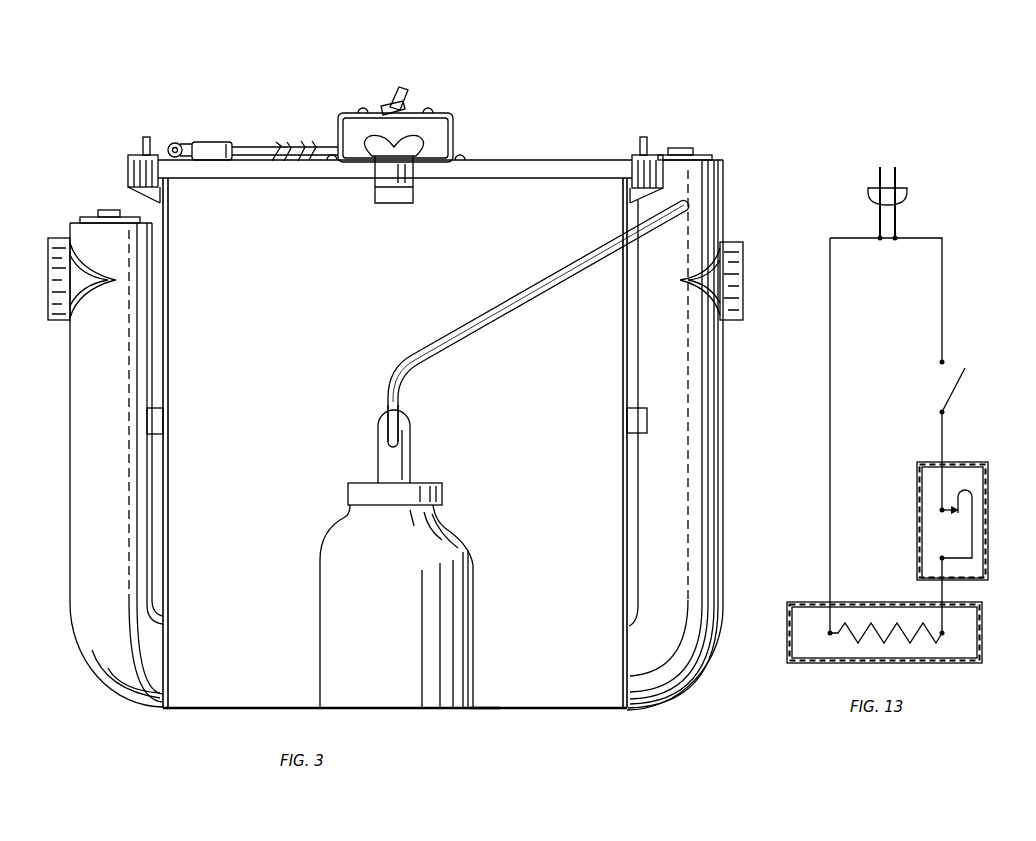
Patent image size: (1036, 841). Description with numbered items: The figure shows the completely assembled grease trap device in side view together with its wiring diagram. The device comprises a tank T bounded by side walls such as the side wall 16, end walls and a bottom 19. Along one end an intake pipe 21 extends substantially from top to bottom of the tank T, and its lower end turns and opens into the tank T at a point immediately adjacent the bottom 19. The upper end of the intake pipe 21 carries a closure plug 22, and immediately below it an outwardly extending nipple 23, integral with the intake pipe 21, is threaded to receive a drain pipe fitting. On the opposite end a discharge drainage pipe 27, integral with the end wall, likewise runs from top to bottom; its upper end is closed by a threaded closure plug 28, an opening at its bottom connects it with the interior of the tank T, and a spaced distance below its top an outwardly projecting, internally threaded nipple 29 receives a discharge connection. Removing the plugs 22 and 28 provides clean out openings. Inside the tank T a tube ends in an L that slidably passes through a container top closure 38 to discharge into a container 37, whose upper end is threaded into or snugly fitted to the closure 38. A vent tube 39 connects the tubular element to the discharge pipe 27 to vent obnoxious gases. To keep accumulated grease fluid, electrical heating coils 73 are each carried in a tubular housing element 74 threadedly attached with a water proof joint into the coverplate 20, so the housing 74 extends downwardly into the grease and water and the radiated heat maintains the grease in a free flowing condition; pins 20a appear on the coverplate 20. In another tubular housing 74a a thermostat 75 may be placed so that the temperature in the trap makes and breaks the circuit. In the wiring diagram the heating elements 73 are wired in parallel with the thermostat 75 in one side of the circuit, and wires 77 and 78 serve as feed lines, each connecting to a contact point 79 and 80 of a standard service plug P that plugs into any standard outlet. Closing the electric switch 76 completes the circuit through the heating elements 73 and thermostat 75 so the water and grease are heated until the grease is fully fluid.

In FIG. 3, the side wall 16 is at (557, 690).
In FIG. 3, the bottom 19 is at (242, 708).
In FIG. 3, the coverplate 20 is at (522, 163).
In FIG. 3, the cover pins 20a is at (146, 137).
In FIG. 3, the intake pipe 21 is at (70, 387).
In FIG. 3, the closure plug 22 is at (107, 210).
In FIG. 3, the nipple 23 is at (48, 305).
In FIG. 3, the drainage pipe 27 is at (723, 217).
In FIG. 3, the closure plug 28 is at (678, 148).
In FIG. 3, the nipple 29 is at (733, 322).
In FIG. 3, the container 37 is at (473, 588).
In FIG. 3, the container top closure 38 is at (430, 481).
In FIG. 3, the vent tube 39 is at (415, 368).
In FIG. 13, the electrical heating coil 73 is at (927, 627).
In FIG. 13, the tubular housing element 74 is at (978, 652).
In FIG. 13, the tubular housing 74a is at (917, 530).
In FIG. 13, the thermostat 75 is at (972, 527).
In FIG. 3, the electric switch 76 is at (402, 86).
In FIG. 13, the electric switch 76 is at (953, 388).
In FIG. 13, the wire 77 is at (895, 218).
In FIG. 3, the wire 78 is at (270, 117).
In FIG. 13, the wire 78 is at (880, 218).
In FIG. 13, the contact point 79 is at (938, 158).
In FIG. 3, the contact point 80 is at (181, 144).
In FIG. 13, the contact point 80 is at (880, 171).
In FIG. 3, the service plug P is at (206, 141).
In FIG. 13, the service plug P is at (907, 190).
In FIG. 3, the tank T is at (478, 710).